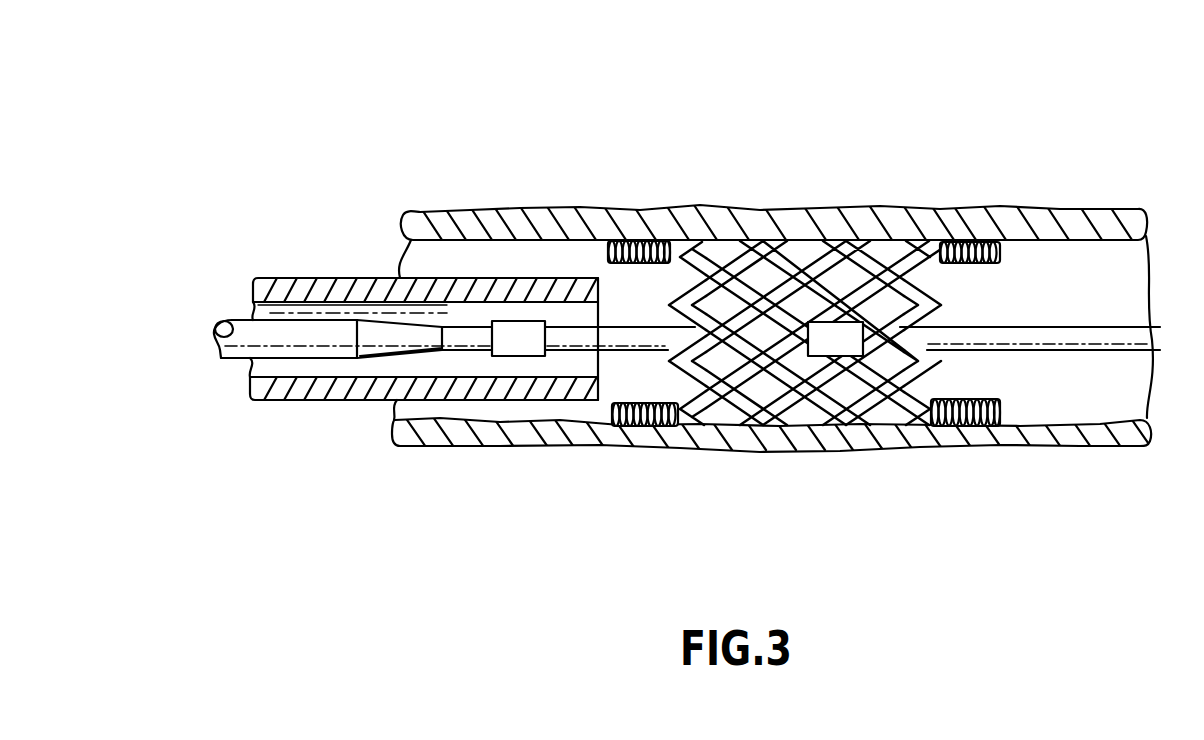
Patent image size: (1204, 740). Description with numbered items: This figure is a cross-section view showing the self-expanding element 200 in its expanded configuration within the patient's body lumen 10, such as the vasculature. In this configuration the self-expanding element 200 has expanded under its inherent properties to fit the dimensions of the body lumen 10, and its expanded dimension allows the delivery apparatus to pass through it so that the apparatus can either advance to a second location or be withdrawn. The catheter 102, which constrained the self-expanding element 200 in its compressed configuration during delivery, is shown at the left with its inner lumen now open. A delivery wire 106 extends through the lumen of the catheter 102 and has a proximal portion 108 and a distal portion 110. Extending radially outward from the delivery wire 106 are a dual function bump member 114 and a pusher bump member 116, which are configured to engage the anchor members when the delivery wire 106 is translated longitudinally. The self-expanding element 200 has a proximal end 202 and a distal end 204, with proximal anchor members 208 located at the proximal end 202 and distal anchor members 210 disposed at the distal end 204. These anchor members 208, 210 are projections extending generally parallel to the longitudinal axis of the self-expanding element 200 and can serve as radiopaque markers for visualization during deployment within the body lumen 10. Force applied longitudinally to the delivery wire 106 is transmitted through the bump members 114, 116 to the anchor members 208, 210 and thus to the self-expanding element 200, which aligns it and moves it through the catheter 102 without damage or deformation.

The body lumen 10 is at (787, 212).
The catheter 102 is at (367, 278).
The delivery wire 106 is at (288, 342).
The proximal portion 108 is at (648, 348).
The distal portion 110 is at (960, 333).
The dual function bump member 114 is at (856, 326).
The pusher bump member 116 is at (508, 356).
The self-expanding element 200 is at (521, 47).
The proximal end 202 is at (678, 254).
The distal end 204 is at (935, 416).
The proximal anchor members 208 is at (638, 241).
The distal anchor members 210 is at (981, 243).